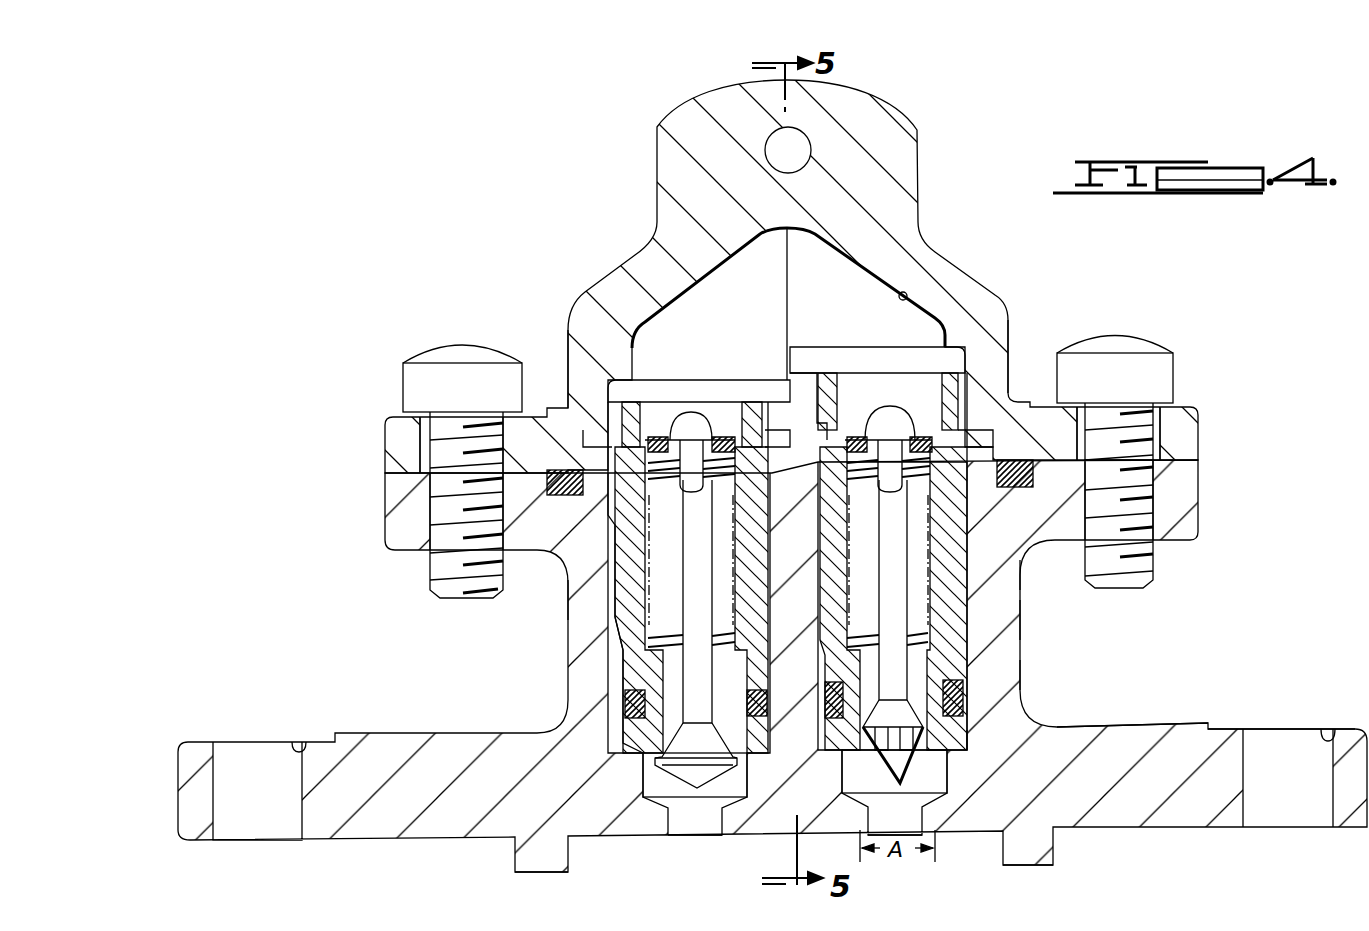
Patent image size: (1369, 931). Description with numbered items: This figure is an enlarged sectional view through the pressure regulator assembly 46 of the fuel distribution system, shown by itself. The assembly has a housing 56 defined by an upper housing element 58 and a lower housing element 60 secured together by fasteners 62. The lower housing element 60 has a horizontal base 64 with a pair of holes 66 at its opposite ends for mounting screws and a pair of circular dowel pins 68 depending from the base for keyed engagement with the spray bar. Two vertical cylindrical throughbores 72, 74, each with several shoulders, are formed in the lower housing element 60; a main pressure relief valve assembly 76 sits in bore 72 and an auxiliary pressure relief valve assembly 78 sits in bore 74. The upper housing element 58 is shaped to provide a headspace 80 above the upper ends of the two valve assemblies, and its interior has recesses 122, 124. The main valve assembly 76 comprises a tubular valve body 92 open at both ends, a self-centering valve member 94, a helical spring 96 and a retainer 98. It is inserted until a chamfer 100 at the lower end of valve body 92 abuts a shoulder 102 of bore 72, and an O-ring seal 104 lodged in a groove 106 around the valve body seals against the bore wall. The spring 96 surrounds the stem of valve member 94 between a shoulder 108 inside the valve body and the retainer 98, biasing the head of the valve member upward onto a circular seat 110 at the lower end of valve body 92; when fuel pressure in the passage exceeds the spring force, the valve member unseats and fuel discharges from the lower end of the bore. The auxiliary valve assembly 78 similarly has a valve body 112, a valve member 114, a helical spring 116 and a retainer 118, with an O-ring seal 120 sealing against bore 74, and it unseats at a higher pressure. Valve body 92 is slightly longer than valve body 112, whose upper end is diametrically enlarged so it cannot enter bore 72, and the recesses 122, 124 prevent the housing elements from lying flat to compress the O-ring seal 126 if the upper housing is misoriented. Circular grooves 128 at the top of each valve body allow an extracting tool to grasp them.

The pressure regulator assembly 46 is at (536, 190).
The housing 56 is at (918, 165).
The upper housing element 58 is at (925, 242).
The headspace 80 is at (907, 293).
The main pressure relief valve assembly 76 is at (1009, 345).
The auxiliary pressure relief valve assembly 78 is at (567, 376).
The fasteners 62 is at (405, 379).
The lower housing element 60 is at (1012, 646).
The horizontal base 64 is at (1162, 730).
The holes 66 is at (299, 742).
The dowel pins 68 is at (516, 860).
The throughbore 72 is at (1020, 624).
The valve body 92 is at (995, 574).
The O-ring seal 104 is at (1005, 682).
The chamfer 100 is at (967, 750).
The valve body 112 is at (607, 598).
The throughbore 74 is at (632, 652).
The helical spring 116 is at (626, 500).
The O-ring seal 126 is at (1020, 490).
The recess 124 is at (643, 386).
The retainer 118 is at (712, 397).
The circular grooves 128 is at (718, 428).
The O-ring seal 120 is at (617, 707).
The valve member 114 is at (708, 790).
The recess 122 is at (920, 362).
The retainer 98 is at (850, 432).
The helical spring 96 is at (955, 483).
The shoulder 108 is at (850, 645).
The groove 106 is at (845, 690).
The valve member 94 is at (947, 776).
The shoulder 102 is at (848, 735).
The circular seat 110 is at (840, 760).